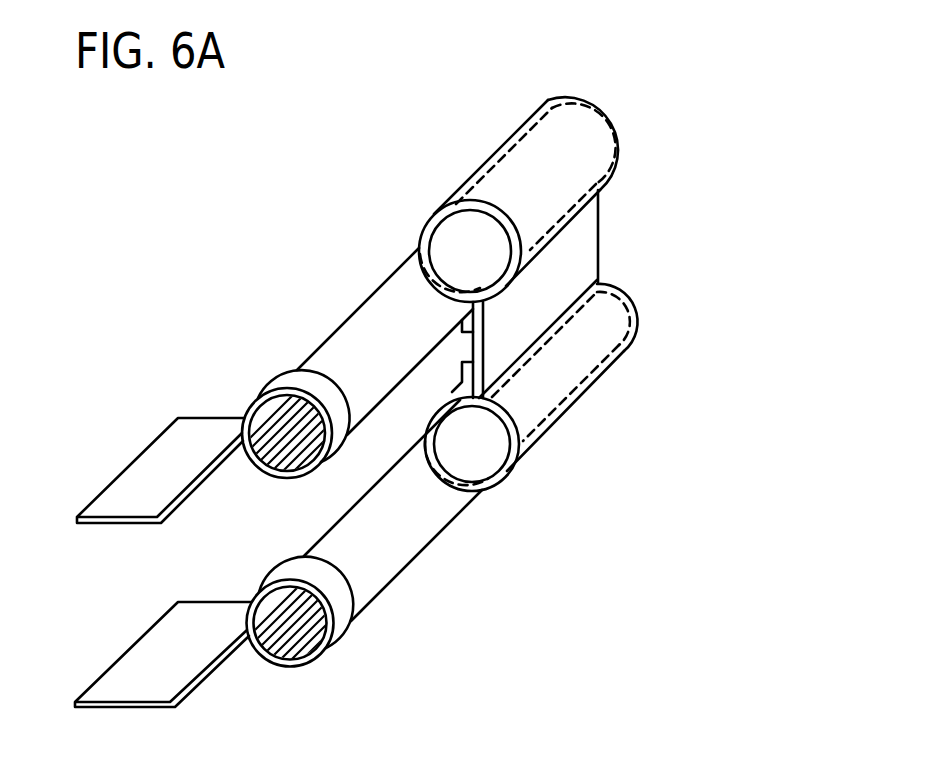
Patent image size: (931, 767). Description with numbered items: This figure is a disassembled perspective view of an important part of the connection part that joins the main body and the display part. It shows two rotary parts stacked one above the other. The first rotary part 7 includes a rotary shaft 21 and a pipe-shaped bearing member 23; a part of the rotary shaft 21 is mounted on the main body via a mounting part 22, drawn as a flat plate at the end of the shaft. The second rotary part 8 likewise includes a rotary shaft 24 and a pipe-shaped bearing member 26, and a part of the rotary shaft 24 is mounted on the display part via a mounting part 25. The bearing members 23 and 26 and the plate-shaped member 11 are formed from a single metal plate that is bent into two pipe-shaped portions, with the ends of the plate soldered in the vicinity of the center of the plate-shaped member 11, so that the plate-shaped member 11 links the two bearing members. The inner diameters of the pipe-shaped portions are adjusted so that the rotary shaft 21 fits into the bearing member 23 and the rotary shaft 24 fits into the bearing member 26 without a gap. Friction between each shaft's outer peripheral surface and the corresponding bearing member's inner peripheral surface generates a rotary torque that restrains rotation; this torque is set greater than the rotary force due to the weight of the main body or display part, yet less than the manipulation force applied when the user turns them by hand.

The second rotary part 8 is at (500, 125).
The bearing member 26 is at (596, 120).
The plate-shaped member 11 is at (584, 253).
The rotary shaft 24 is at (353, 355).
The bearing member 23 is at (637, 318).
The first rotary part 7 is at (590, 400).
The mounting part 25 is at (128, 493).
The rotary shaft 21 is at (422, 530).
The mounting part 22 is at (183, 662).